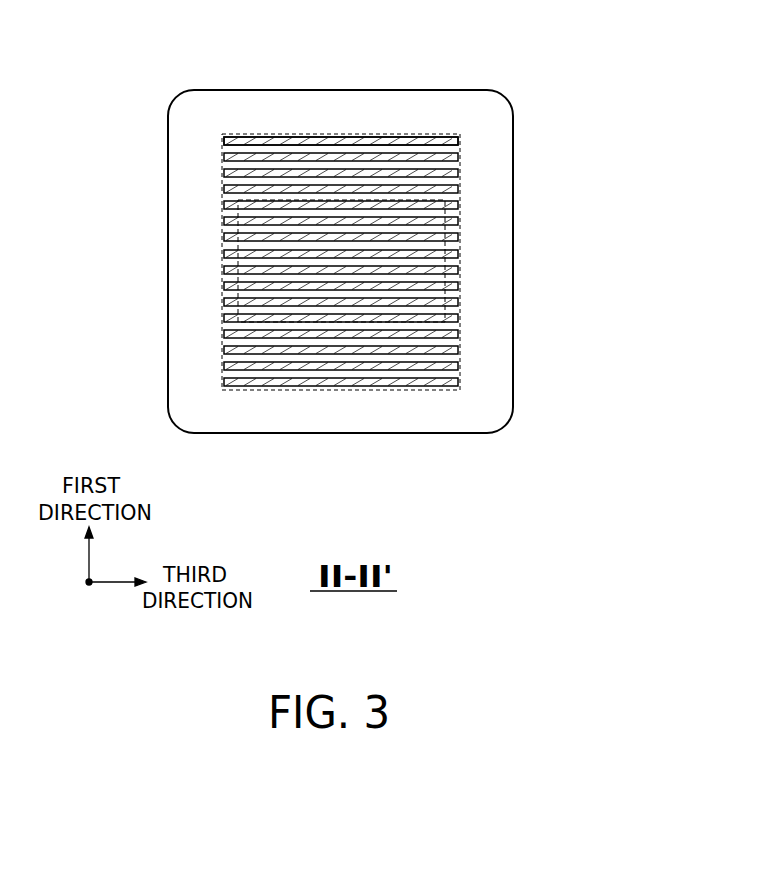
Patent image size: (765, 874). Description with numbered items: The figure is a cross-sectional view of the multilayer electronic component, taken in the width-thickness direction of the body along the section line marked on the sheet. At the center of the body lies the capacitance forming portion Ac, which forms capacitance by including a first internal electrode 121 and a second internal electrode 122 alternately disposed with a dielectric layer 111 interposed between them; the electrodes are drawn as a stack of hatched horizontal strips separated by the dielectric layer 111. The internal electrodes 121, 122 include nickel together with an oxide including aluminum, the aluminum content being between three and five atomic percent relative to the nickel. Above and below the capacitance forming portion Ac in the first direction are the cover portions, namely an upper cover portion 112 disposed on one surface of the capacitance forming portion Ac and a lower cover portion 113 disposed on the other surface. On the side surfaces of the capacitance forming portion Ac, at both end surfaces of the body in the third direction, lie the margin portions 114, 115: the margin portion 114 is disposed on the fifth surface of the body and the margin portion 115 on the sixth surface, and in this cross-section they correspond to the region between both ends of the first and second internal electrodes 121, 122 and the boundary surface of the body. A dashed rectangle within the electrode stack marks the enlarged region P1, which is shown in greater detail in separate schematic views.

The dielectric layer 111 is at (265, 163).
The upper cover portion 112 is at (331, 101).
The lower cover portion 113 is at (324, 433).
The margin portion 114 is at (183, 241).
The margin portion 115 is at (500, 240).
The first internal electrode 121 is at (407, 140).
The second internal electrode 122 is at (427, 155).
The enlarged region P1 is at (458, 276).
The capacitance forming portion Ac is at (478, 327).